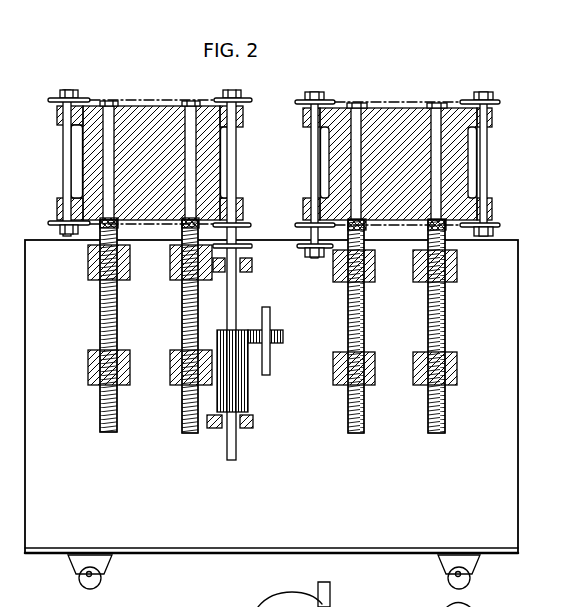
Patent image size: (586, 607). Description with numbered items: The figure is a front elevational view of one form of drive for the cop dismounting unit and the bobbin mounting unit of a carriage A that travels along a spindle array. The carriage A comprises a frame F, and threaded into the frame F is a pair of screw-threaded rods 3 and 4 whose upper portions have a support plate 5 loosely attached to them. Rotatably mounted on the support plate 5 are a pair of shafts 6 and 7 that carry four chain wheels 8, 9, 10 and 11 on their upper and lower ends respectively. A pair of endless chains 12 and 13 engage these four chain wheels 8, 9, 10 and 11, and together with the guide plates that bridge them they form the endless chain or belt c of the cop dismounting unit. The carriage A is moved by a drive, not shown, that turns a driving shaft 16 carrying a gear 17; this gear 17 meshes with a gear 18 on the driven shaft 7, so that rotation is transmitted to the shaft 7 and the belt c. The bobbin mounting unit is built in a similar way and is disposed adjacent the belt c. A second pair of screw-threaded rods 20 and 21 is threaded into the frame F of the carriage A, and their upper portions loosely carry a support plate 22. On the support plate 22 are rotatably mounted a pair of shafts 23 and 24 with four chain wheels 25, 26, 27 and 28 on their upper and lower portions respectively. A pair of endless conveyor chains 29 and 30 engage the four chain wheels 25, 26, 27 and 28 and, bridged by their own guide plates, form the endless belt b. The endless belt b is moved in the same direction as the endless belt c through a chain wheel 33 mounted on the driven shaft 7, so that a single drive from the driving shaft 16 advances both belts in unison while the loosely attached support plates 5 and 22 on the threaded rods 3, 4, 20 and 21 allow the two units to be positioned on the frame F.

The screw-threaded rod 3 is at (108, 432).
The screw-threaded rod 4 is at (190, 433).
The support plate 5 is at (86, 145).
The shaft 6 is at (65, 164).
The driven shaft 7 is at (237, 143).
The chain wheel 8 is at (60, 97).
The chain wheel 9 is at (56, 221).
The chain wheel 10 is at (222, 97).
The chain wheel 11 is at (243, 228).
The endless chain 12 is at (168, 97).
The endless chain 13 is at (213, 200).
The driving shaft 16 is at (270, 366).
The gear 17 is at (283, 337).
The gear 18 is at (248, 402).
The screw-threaded rod 20 is at (356, 433).
The screw-threaded rod 21 is at (435, 433).
The support plate 22 is at (474, 148).
The shaft 23 is at (312, 180).
The shaft 24 is at (488, 163).
The chain wheel 25 is at (322, 99).
The chain wheel 26 is at (302, 224).
The chain wheel 27 is at (488, 98).
The chain wheel 28 is at (490, 224).
The endless conveyor chain 29 is at (408, 99).
The endless conveyor chain 30 is at (440, 230).
The chain wheel 33 is at (243, 250).
The frame F is at (518, 404).
The carriage A is at (281, 512).
The endless belt c is at (124, 97).
The endless belt b is at (394, 99).